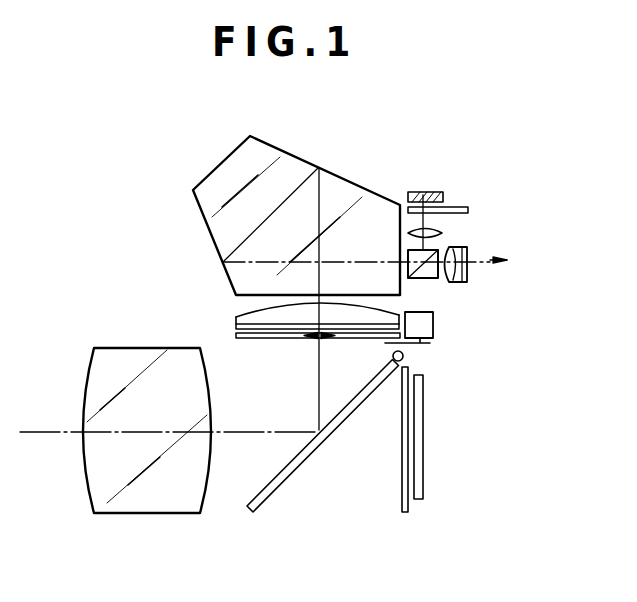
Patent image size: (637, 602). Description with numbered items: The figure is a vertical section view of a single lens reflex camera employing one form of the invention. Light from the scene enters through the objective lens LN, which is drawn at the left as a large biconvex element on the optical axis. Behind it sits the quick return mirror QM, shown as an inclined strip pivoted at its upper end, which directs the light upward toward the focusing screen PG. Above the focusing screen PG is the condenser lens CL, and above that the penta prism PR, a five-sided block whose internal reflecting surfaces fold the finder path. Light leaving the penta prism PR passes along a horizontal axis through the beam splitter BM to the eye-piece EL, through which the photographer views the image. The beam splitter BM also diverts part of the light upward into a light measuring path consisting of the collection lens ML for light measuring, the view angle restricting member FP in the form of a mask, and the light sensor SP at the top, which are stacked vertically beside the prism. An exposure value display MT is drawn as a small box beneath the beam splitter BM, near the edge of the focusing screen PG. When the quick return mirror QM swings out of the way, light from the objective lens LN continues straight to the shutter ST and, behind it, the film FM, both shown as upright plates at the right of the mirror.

The penta prism PR is at (293, 158).
The condenser lens CL is at (238, 316).
The focusing screen PG is at (268, 339).
The light sensor SP is at (432, 190).
The view angle restricting member FP is at (458, 207).
The collection lens ML is at (442, 232).
The beam splitter BM is at (428, 278).
The eye-piece EL is at (468, 252).
The exposure value display MT is at (433, 323).
The quick return mirror QM is at (277, 488).
The shutter ST is at (400, 480).
The film FM is at (423, 485).
The objective lens LN is at (200, 515).